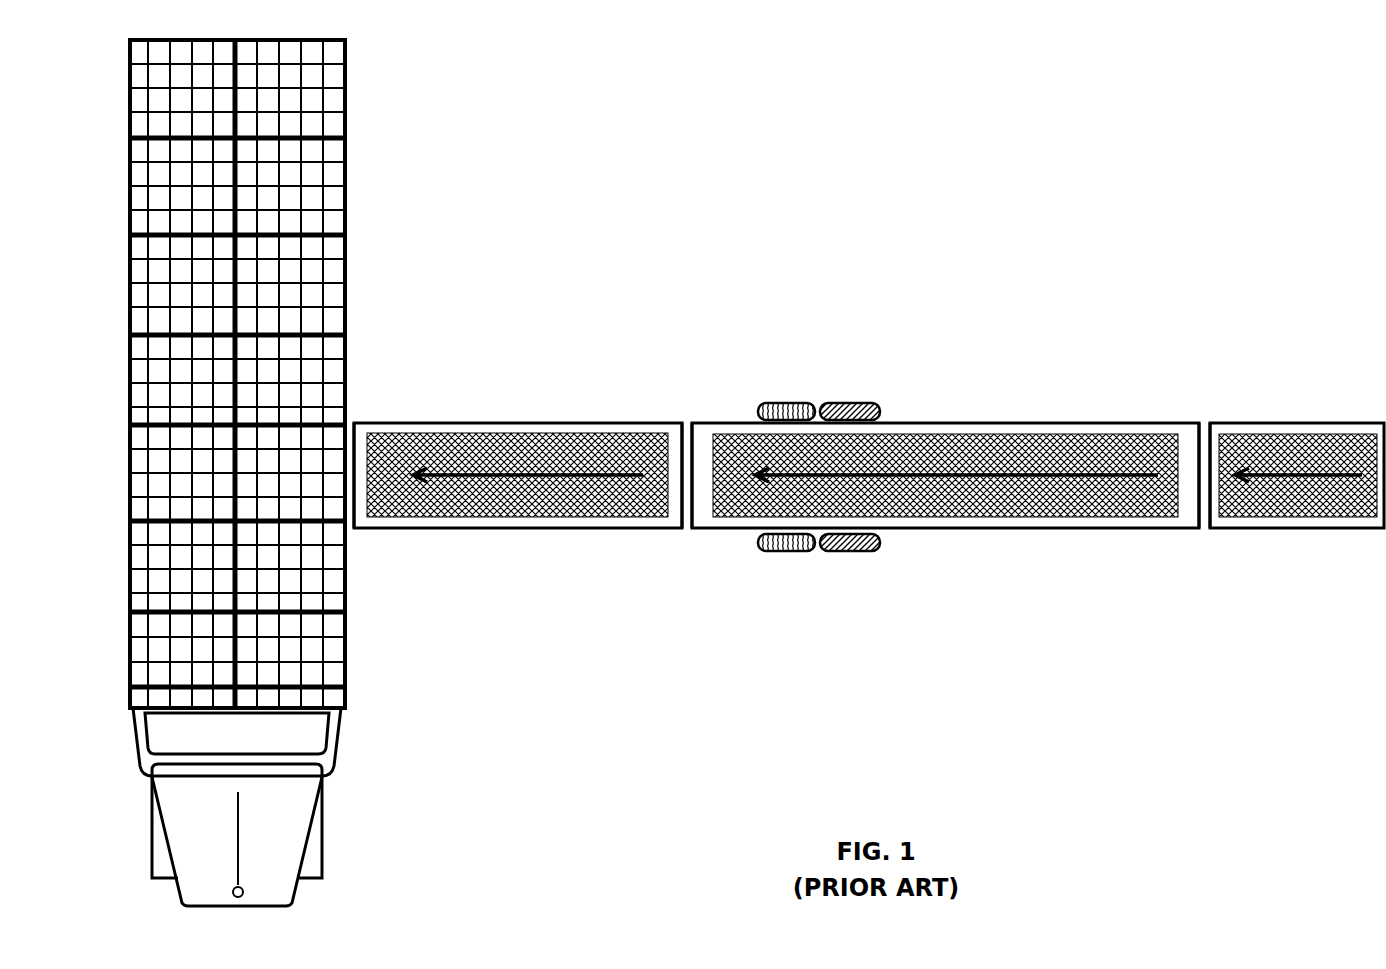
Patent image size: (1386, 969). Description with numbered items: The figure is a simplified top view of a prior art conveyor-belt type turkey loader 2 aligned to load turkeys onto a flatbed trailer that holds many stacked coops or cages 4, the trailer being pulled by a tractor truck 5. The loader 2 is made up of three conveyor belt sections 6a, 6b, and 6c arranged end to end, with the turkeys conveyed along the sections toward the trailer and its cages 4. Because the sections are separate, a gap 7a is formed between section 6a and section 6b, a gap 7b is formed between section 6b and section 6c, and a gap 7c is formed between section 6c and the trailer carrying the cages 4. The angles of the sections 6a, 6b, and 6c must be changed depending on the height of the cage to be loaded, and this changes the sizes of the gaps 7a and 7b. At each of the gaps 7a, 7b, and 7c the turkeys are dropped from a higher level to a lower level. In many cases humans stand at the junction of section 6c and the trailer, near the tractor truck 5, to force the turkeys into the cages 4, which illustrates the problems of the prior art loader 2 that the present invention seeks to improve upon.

The turkey loader 2 is at (869, 486).
The coops or cages 4 is at (129, 56).
The tractor truck 5 is at (336, 735).
The conveyor belt section 6a is at (1297, 530).
The conveyor belt section 6b is at (1045, 530).
The conveyor belt section 6c is at (513, 530).
The gap 7a is at (1219, 405).
The gap 7b is at (694, 405).
The gap 7c is at (373, 408).